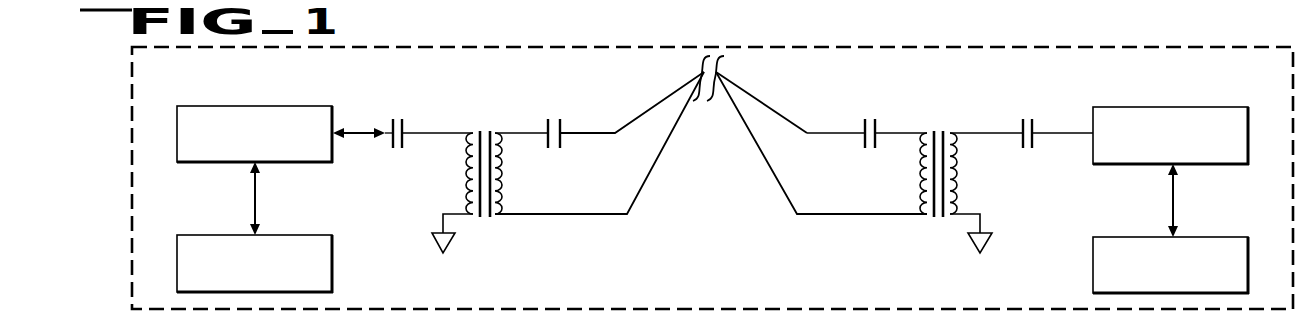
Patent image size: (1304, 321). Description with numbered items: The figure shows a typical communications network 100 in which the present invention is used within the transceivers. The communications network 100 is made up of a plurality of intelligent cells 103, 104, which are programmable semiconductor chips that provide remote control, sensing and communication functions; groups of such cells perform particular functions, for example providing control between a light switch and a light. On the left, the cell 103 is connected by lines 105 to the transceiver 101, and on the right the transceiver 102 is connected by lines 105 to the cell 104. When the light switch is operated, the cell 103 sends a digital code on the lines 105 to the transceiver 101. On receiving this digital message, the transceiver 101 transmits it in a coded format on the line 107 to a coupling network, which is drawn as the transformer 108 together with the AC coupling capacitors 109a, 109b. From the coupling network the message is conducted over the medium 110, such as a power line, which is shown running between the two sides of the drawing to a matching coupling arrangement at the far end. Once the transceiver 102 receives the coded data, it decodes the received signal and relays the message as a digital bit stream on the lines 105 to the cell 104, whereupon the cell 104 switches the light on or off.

The communications network 100 is at (528, 47).
The transceiver 101 is at (240, 152).
The transceiver 102 is at (1156, 154).
The intelligent cell 103 is at (240, 282).
The intelligent cell 104 is at (1156, 284).
The lines 105 is at (261, 206).
The line 107 is at (338, 129).
The transformer 108 is at (505, 184).
The AC coupling capacitor 109a is at (406, 124).
The AC coupling capacitor 109b is at (547, 124).
The medium 110 is at (598, 132).